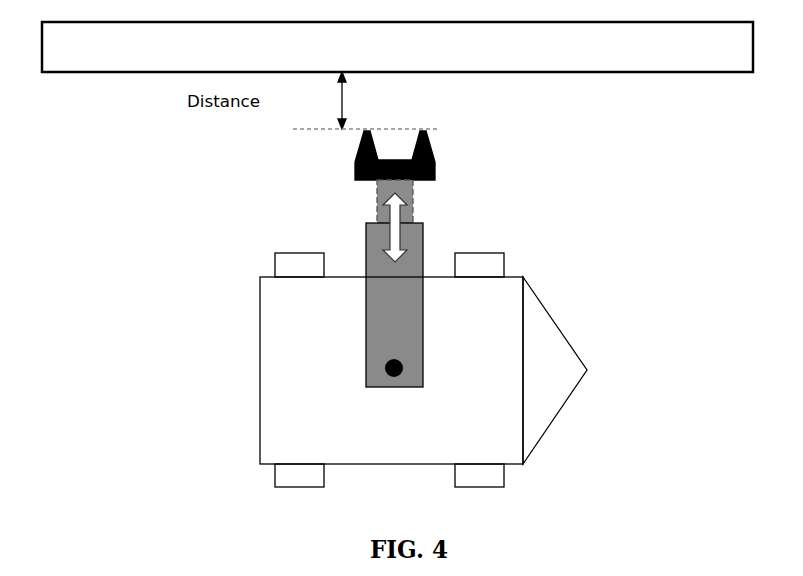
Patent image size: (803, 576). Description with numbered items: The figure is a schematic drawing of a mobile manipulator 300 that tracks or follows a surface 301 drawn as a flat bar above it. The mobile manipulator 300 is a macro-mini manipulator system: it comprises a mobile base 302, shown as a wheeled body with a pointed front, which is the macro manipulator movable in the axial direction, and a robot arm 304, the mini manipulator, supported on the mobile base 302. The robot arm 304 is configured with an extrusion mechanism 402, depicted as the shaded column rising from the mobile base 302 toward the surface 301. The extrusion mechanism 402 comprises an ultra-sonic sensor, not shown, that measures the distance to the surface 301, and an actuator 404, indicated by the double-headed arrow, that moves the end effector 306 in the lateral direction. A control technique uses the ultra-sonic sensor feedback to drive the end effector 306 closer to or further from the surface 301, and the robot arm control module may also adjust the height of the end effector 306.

The mobile manipulator 300 is at (496, 380).
The surface 301 is at (628, 72).
The mobile base 302 is at (488, 453).
The robot arm 304 is at (466, 199).
The end effector 306 is at (435, 158).
The extrusion mechanism 402 is at (417, 258).
The actuator 404 is at (380, 205).